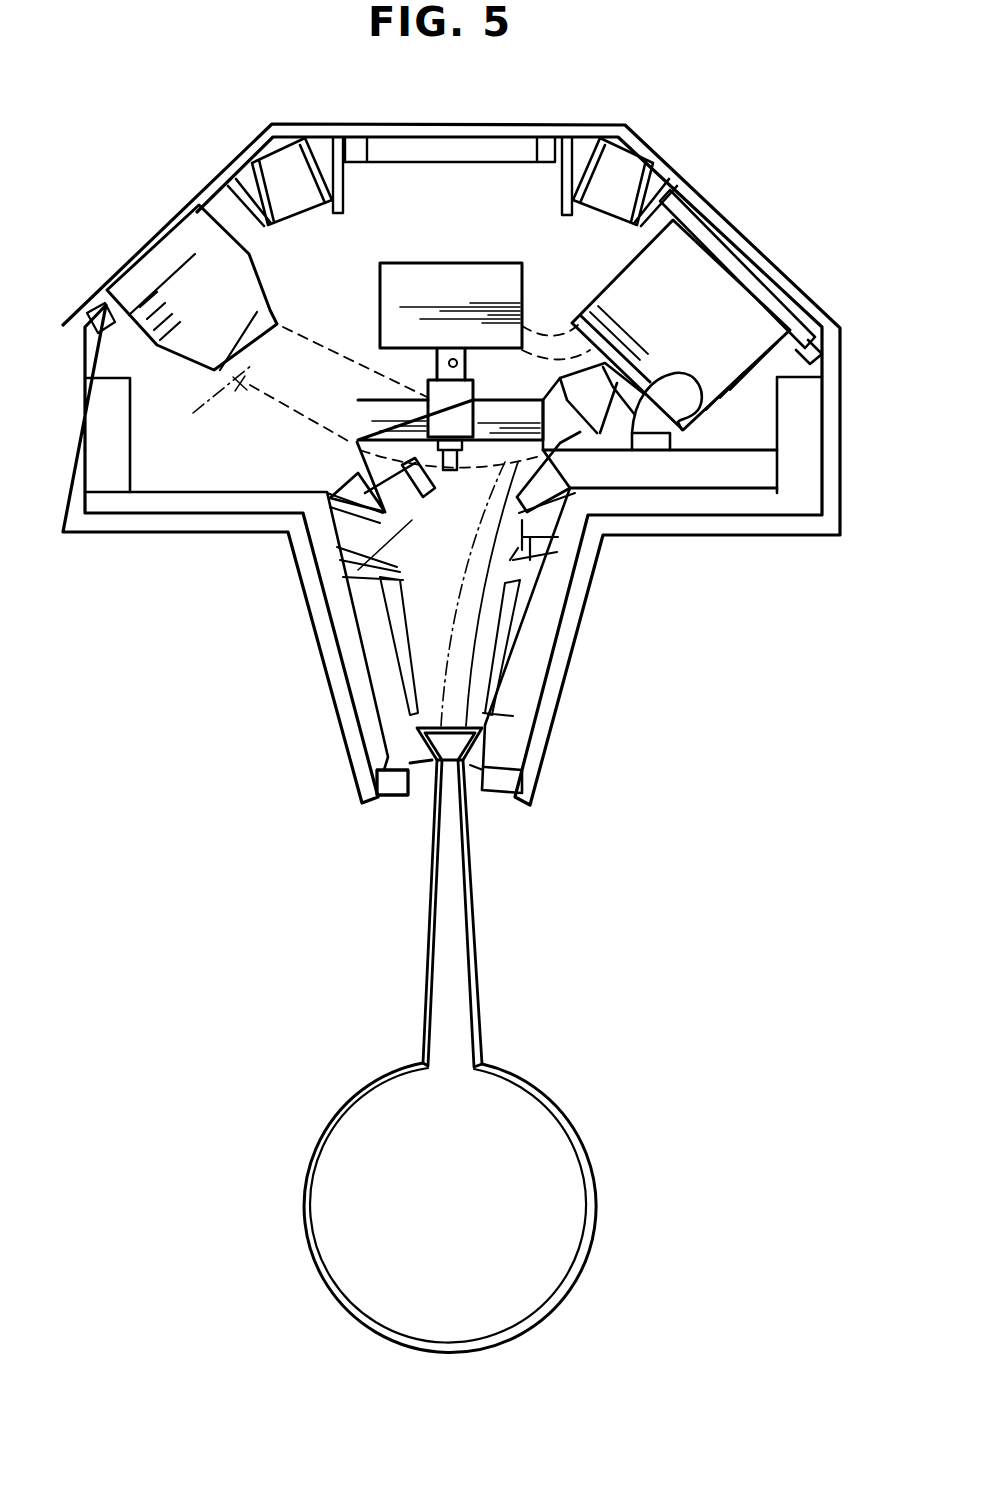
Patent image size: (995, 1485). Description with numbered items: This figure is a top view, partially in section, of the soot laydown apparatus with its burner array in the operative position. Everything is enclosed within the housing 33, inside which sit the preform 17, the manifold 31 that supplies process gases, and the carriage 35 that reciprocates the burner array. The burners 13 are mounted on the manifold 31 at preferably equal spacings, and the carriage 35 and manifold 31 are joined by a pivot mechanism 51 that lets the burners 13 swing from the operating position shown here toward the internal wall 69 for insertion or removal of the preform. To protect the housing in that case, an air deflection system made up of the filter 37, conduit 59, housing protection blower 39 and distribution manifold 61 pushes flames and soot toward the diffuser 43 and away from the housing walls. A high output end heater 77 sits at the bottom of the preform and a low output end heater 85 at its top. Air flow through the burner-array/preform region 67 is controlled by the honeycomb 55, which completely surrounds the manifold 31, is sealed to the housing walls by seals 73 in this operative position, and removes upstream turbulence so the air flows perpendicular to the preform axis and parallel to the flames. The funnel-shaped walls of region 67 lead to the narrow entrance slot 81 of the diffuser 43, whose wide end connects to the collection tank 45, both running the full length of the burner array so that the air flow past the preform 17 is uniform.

The housing 33 is at (594, 127).
The filter 37 is at (155, 258).
The housing protection blower 39 is at (696, 307).
The carriage 35 is at (441, 305).
The pivot mechanism 51 is at (458, 364).
The manifold 31 is at (464, 425).
The seals 73 is at (357, 455).
The burners 13 is at (462, 456).
The preform 17 is at (460, 530).
The conduit 59 is at (205, 414).
The honeycomb 55 is at (367, 412).
The burner-array/preform region 67 is at (350, 580).
The low output end heater 85 is at (412, 520).
The high output end heaters 77 is at (392, 782).
The internal wall 69 is at (522, 558).
The distribution manifold 61 is at (523, 505).
The entrance slot 81 is at (447, 765).
The diffuser 43 is at (477, 906).
The collection tank 45 is at (584, 1139).